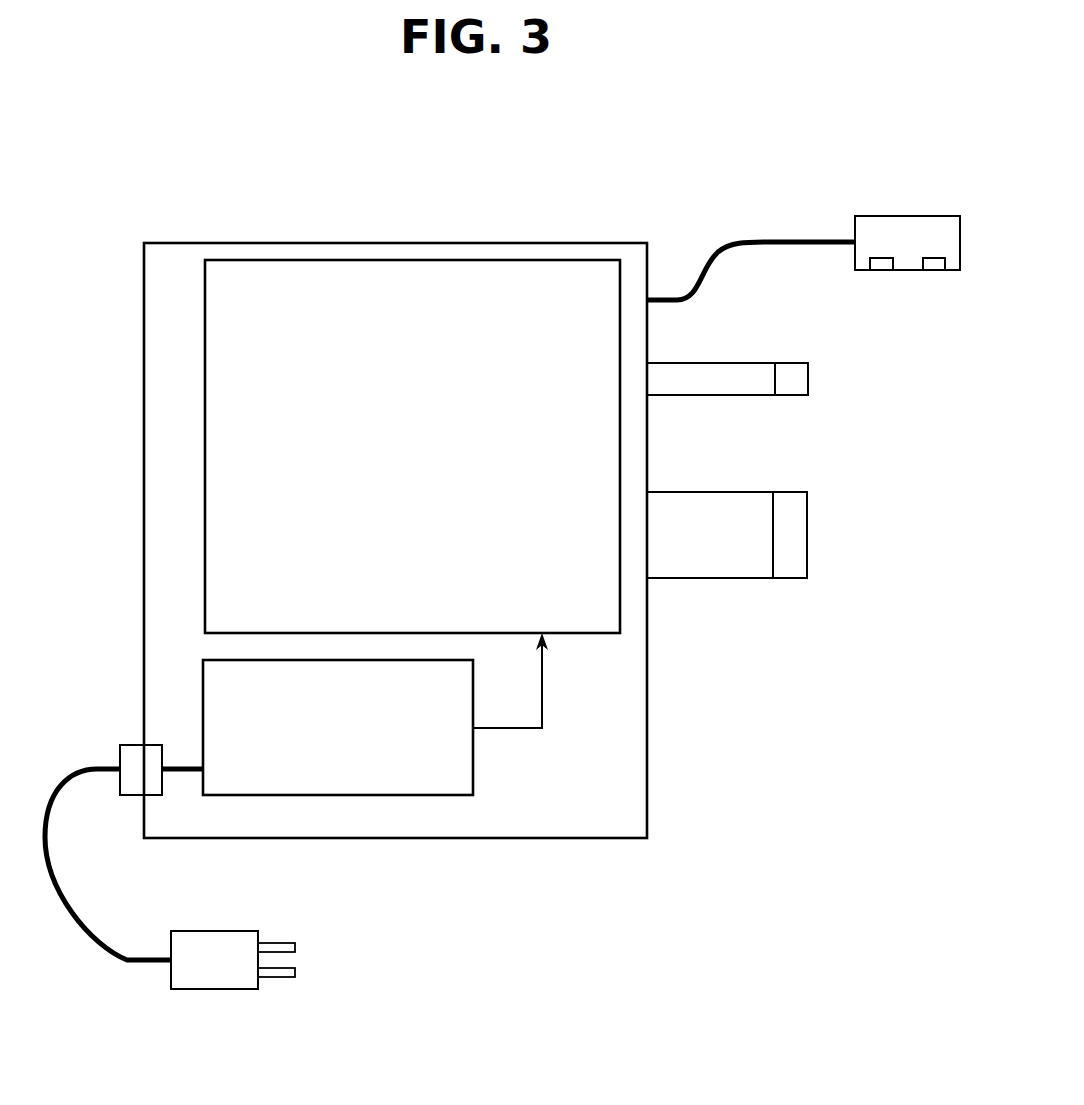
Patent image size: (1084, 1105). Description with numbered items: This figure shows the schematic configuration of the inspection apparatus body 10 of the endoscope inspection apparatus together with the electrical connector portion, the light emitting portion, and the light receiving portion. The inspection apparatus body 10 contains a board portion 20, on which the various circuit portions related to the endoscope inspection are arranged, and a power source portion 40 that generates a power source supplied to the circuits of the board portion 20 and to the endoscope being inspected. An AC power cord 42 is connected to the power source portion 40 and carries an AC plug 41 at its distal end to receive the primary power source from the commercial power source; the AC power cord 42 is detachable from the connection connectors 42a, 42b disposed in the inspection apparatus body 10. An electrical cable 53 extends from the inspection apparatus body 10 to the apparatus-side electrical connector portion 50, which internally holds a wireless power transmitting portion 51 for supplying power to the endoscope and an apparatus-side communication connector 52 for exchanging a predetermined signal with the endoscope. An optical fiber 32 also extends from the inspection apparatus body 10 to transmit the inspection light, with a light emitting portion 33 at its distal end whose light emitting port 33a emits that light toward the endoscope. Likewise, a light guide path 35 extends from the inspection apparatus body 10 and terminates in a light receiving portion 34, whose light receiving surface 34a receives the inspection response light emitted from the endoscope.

The inspection apparatus body 10 is at (395, 243).
The board portion 20 is at (205, 326).
The power source portion 40 is at (203, 727).
The electrical cable 53 is at (745, 242).
The apparatus-side electrical connector portion 50 is at (910, 216).
The wireless power transmitting portion 51 is at (881, 271).
The apparatus-side communication connector 52 is at (933, 271).
The optical fiber 32 is at (755, 363).
The light emitting portion 33 is at (795, 363).
The light emitting port 33a is at (808, 378).
The light guide path 35 is at (755, 492).
The light receiving portion 34 is at (795, 492).
The light receiving surface 34a is at (807, 532).
The connection connector 42b is at (120, 755).
The connection connector 42a is at (162, 788).
The AC power cord 42 is at (64, 897).
The AC plug 41 is at (215, 931).